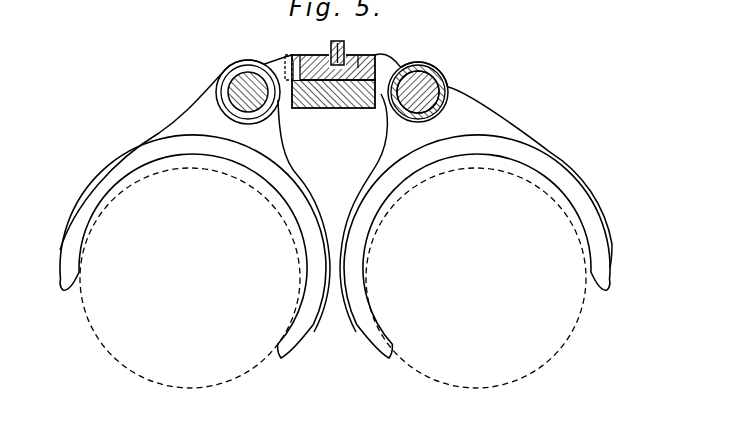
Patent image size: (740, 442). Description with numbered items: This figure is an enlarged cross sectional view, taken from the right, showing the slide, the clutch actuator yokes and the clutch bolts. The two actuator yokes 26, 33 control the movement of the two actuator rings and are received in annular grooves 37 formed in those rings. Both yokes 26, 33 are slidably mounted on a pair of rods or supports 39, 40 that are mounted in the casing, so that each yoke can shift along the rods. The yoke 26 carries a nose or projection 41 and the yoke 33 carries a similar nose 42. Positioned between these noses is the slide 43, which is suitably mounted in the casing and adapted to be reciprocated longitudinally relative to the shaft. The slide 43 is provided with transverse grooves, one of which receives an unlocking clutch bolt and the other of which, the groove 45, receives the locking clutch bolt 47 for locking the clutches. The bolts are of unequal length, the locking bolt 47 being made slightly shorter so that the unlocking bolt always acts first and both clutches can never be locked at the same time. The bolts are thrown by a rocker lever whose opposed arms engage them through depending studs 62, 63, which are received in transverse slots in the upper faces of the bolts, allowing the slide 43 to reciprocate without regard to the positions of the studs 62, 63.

The actuator yoke 26 is at (589, 222).
The actuator yoke 33 is at (91, 193).
The annular grooves 37 is at (331, 10).
The rod or support 39 is at (236, 88).
The rod or support 40 is at (422, 91).
The nose or projection 41 is at (388, 63).
The nose 42 is at (282, 63).
The slide 43 is at (333, 93).
The transverse groove 45 is at (301, 56).
The locking clutch bolt 47 is at (357, 58).
The depending stud 62 is at (329, 50).
The depending stud 63 is at (348, 55).